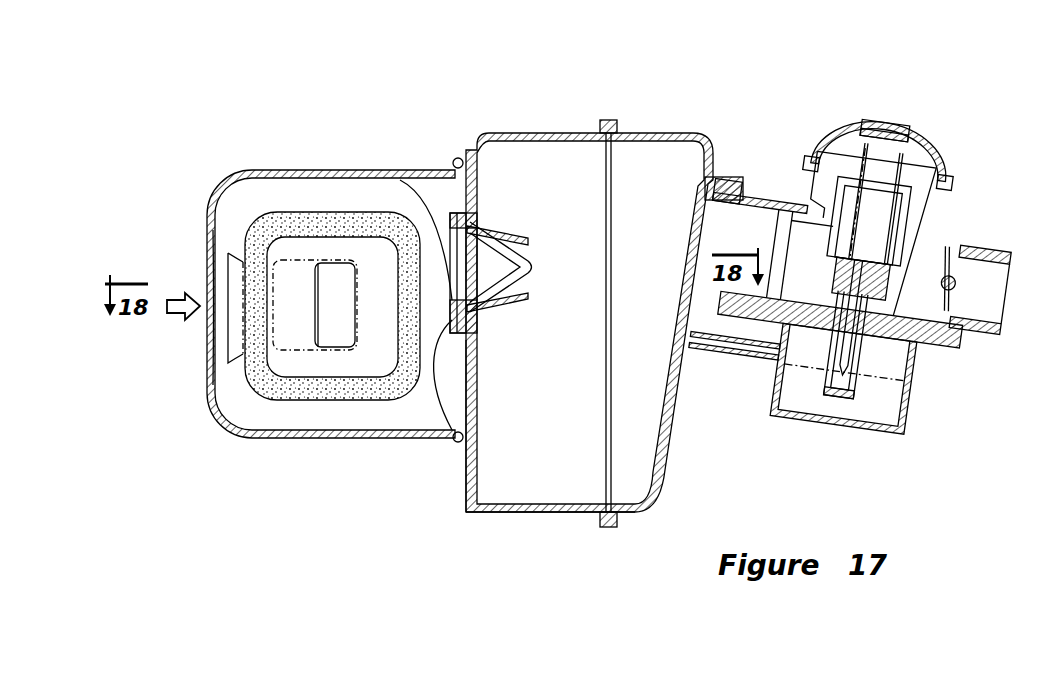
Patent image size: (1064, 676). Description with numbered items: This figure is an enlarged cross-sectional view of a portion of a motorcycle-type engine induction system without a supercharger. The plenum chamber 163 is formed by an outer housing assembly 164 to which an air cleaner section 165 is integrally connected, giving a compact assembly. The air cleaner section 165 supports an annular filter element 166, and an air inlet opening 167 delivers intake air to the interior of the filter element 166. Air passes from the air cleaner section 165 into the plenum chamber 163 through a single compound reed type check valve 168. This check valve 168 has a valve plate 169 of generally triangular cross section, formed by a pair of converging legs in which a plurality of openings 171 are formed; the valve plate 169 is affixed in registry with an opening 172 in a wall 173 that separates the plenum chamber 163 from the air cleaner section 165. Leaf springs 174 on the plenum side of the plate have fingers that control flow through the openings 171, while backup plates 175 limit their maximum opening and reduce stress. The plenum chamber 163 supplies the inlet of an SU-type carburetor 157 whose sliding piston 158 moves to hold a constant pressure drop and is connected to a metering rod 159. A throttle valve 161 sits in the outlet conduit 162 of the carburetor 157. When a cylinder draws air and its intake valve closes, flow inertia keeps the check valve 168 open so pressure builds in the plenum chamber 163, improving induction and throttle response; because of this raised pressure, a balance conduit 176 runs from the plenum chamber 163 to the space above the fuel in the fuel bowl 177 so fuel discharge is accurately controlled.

The carburetor 157 is at (930, 112).
The sliding piston 158 is at (893, 267).
The metering rod 159 is at (873, 358).
The throttle valve 161 is at (955, 290).
The outlet conduit 162 is at (990, 255).
The plenum chamber 163 is at (645, 160).
The outer housing assembly 164 is at (485, 520).
The air cleaner section 165 is at (318, 163).
The filter element 166 is at (275, 222).
The air inlet opening 167 is at (225, 332).
The reed type check valve 168 is at (492, 208).
The valve plate 169 is at (442, 333).
The openings 171 is at (455, 225).
The opening 172 is at (470, 330).
The wall 173 is at (480, 408).
The leaf springs 174 is at (532, 278).
The backup plates 175 is at (513, 240).
The balance conduit 176 is at (715, 348).
The fuel bowl 177 is at (818, 432).